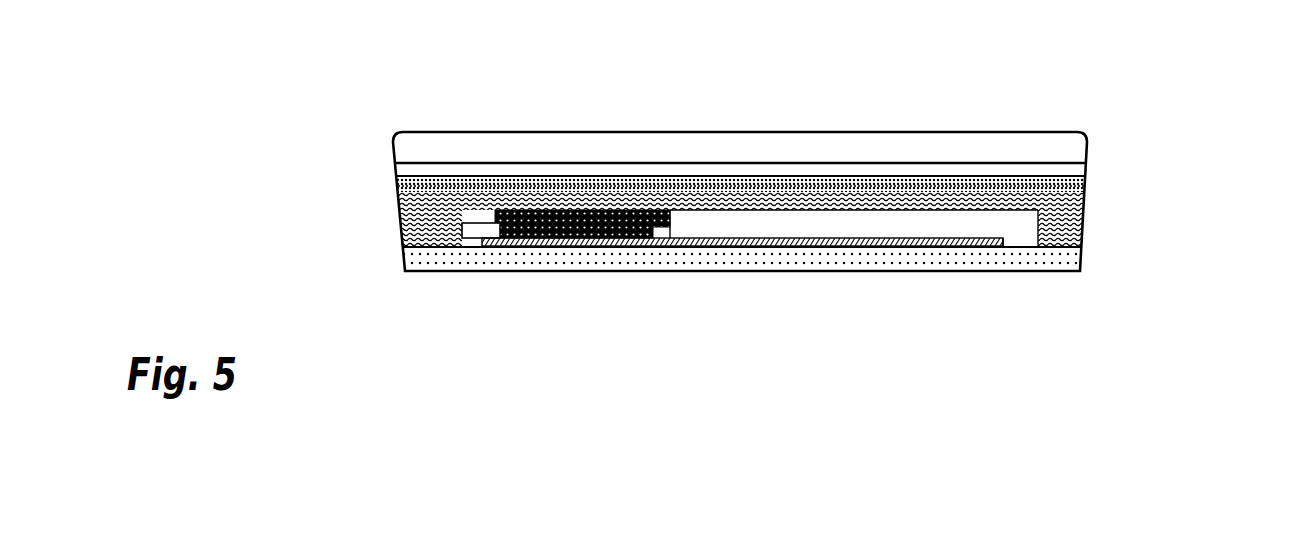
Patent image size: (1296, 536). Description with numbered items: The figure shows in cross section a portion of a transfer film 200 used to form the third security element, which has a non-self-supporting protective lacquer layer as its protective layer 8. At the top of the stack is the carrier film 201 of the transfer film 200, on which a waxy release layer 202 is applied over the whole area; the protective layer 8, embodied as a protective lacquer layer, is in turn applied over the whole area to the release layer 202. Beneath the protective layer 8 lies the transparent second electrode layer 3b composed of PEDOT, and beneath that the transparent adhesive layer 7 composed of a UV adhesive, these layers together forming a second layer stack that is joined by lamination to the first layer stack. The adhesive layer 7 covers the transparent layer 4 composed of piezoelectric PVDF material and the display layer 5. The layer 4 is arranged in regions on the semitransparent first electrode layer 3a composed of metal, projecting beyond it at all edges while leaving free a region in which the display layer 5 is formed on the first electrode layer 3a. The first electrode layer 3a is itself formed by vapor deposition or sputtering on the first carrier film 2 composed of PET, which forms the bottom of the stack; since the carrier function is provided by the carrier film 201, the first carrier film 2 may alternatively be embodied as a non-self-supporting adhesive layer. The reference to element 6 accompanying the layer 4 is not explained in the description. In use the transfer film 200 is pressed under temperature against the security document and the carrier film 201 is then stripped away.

The transfer film 200 is at (1137, 175).
The carrier film 201 is at (832, 152).
The release layer 202 is at (653, 170).
The protective layer 8 is at (492, 181).
The second electrode layer 3b is at (398, 193).
The adhesive layer 7 is at (405, 237).
The display layer 5 is at (565, 239).
The auxiliary wiring 6 is at (472, 239).
The layer composed of piezoelectric material 4 is at (1023, 232).
The first electrode layer 3a is at (918, 252).
The first carrier film 2 is at (852, 262).